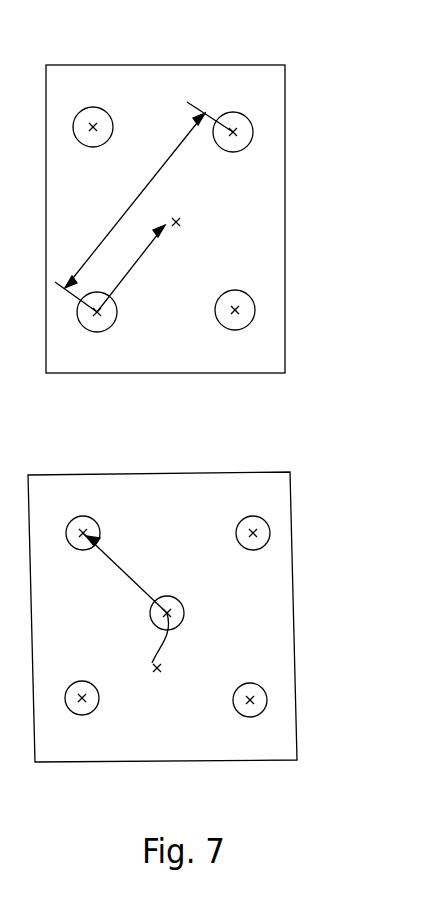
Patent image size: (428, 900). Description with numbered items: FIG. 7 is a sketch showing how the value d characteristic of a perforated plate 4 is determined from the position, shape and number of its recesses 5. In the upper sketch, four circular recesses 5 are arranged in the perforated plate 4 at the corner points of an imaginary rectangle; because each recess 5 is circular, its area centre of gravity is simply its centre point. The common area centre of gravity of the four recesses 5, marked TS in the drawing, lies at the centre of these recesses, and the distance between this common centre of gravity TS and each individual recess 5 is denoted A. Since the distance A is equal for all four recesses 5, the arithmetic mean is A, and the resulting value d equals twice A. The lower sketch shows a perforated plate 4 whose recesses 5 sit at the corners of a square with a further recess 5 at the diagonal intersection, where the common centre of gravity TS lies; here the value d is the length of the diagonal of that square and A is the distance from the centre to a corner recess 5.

The perforated plate 4 is at (145, 77).
The recess 5 is at (254, 116).
The value d is at (144, 207).
The distance A is at (125, 419).
The tool centre point TS is at (180, 446).